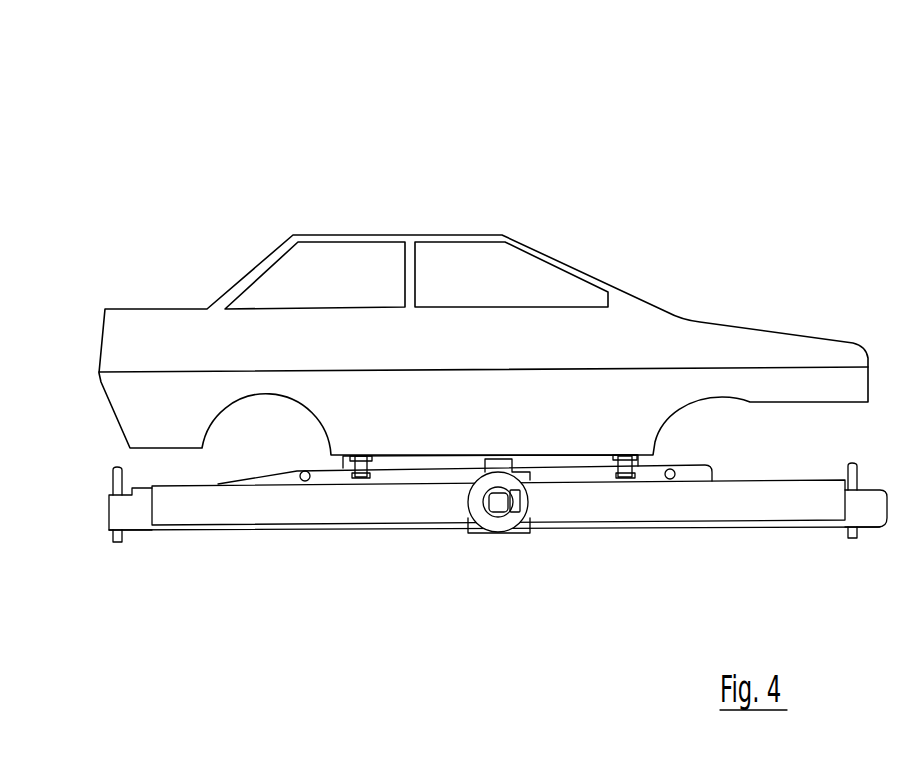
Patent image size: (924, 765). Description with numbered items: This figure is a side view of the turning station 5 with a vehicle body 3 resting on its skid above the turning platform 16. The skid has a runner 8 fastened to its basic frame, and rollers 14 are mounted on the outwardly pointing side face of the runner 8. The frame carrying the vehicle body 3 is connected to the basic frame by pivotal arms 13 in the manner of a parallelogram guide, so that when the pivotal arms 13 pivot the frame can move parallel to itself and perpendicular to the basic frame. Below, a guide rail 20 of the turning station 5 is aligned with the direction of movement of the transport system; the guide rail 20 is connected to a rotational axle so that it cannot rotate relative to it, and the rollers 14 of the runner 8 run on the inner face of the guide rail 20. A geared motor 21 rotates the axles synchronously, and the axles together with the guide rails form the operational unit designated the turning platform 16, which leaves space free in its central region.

The vehicle body 3 is at (173, 333).
The turning station 5 is at (809, 151).
The runner 8 is at (137, 517).
The pivotal arm 13 is at (273, 478).
The roller 14 is at (438, 470).
The turning platform 16 is at (805, 492).
The guide rail 20 is at (398, 499).
The geared motor 21 is at (498, 518).